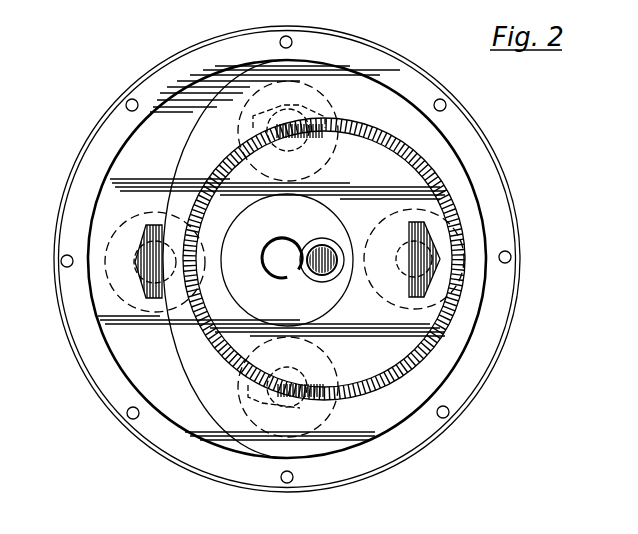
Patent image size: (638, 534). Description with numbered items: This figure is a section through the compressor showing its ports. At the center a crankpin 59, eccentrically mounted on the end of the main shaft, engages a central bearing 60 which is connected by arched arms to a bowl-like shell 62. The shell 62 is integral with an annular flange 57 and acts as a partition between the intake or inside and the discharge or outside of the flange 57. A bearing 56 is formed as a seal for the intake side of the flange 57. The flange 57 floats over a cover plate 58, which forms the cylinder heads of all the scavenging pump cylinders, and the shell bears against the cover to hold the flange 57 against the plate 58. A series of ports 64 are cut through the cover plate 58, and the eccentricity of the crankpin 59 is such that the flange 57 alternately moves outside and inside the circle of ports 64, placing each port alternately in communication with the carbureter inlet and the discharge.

The annular flange 57 is at (425, 373).
The cover plate 58 is at (140, 348).
The bowl-like shell 62 is at (412, 360).
The bearing 56 is at (319, 208).
The central bearing 60 is at (310, 278).
The crankpin 59 is at (324, 262).
The ports 64 is at (150, 224).